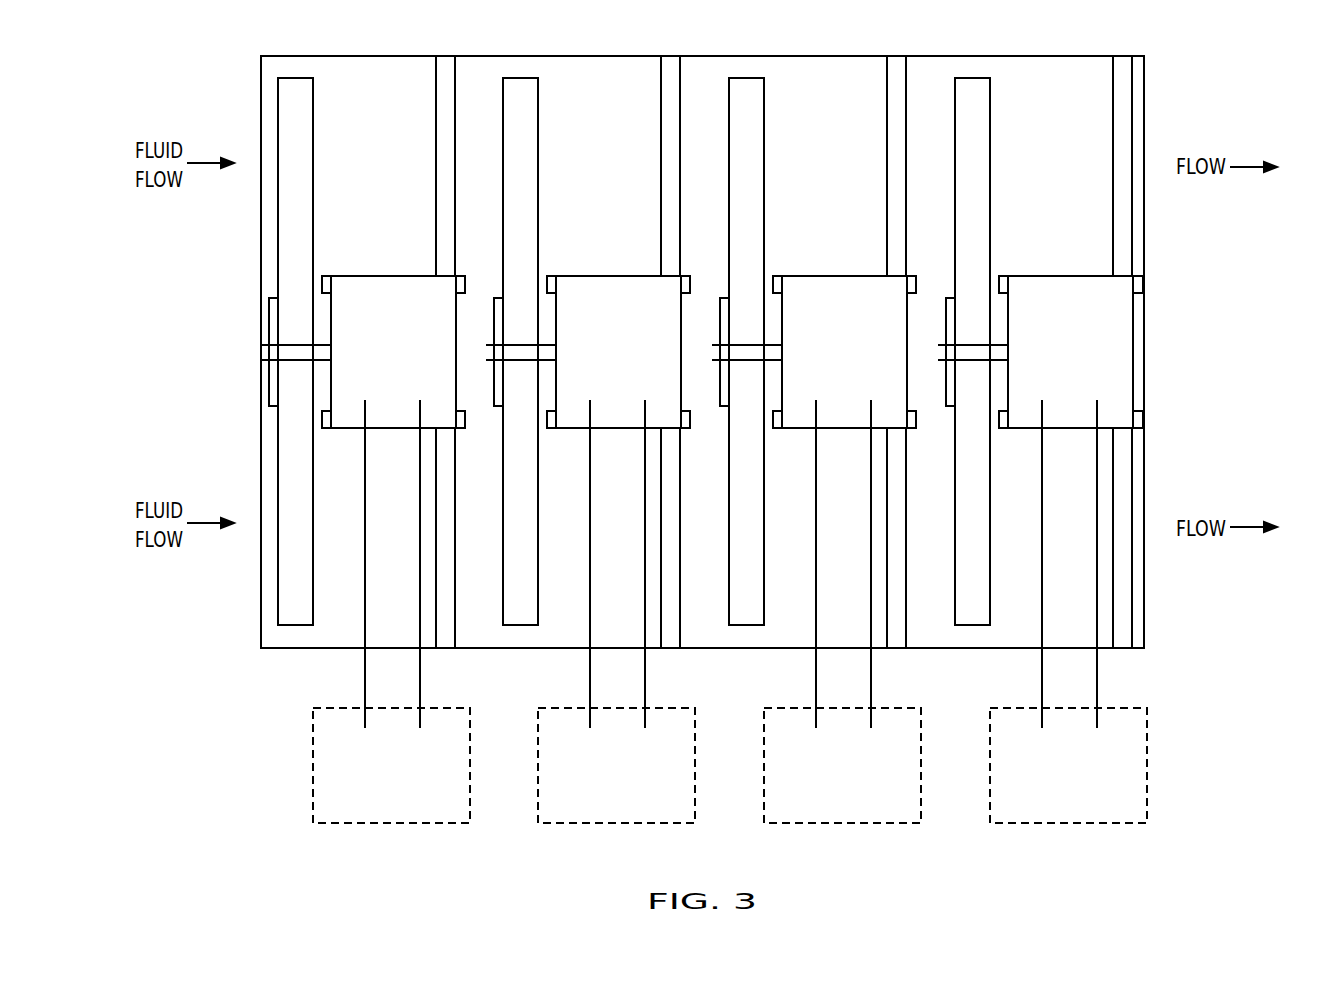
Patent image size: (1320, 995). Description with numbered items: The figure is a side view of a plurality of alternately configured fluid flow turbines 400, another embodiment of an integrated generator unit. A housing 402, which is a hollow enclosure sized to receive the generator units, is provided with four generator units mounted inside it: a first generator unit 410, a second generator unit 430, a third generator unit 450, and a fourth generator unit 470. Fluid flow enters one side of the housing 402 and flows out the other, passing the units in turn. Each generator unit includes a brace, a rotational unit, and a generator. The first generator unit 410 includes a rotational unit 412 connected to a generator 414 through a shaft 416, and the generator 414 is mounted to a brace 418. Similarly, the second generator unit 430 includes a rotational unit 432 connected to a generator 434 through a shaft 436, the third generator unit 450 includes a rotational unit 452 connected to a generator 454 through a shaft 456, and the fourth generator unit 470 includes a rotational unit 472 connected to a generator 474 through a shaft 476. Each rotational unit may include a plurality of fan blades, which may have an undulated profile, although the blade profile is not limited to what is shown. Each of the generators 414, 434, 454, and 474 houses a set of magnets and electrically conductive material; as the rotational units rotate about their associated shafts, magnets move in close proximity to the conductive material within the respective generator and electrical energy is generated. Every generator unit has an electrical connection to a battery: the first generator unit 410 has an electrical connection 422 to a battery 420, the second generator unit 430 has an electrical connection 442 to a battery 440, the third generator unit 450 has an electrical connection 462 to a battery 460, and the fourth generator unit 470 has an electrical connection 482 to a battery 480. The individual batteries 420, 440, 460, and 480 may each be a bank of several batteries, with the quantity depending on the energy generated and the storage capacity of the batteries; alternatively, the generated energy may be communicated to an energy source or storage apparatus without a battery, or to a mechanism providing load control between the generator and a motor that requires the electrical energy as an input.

The plurality of alternately configured fluid flow turbines 400 is at (267, 729).
The housing 402 is at (295, 55).
The first generator unit 410 is at (375, 595).
The rotational unit 412 is at (293, 618).
The generator 414 is at (393, 403).
The shaft 416 is at (322, 353).
The brace 418 is at (447, 70).
The battery 420 is at (313, 798).
The electrical connection 422 is at (420, 680).
The second generator unit 430 is at (600, 595).
The rotational unit 432 is at (518, 618).
The generator 434 is at (618, 403).
The shaft 436 is at (547, 353).
The battery 440 is at (538, 798).
The electrical connection 442 is at (645, 680).
The third generator unit 450 is at (826, 595).
The rotational unit 452 is at (744, 618).
The generator 454 is at (844, 403).
The shaft 456 is at (897, 70).
The battery 460 is at (764, 798).
The electrical connection 462 is at (871, 680).
The fourth generator unit 470 is at (1052, 595).
The rotational unit 472 is at (970, 618).
The generator 474 is at (1070, 403).
The shaft 476 is at (999, 353).
The battery 480 is at (990, 798).
The electrical connection 482 is at (1097, 680).